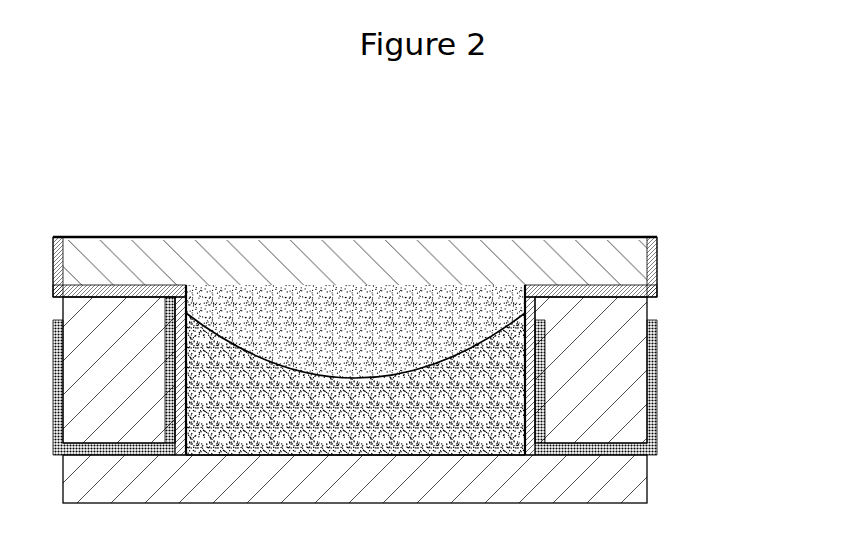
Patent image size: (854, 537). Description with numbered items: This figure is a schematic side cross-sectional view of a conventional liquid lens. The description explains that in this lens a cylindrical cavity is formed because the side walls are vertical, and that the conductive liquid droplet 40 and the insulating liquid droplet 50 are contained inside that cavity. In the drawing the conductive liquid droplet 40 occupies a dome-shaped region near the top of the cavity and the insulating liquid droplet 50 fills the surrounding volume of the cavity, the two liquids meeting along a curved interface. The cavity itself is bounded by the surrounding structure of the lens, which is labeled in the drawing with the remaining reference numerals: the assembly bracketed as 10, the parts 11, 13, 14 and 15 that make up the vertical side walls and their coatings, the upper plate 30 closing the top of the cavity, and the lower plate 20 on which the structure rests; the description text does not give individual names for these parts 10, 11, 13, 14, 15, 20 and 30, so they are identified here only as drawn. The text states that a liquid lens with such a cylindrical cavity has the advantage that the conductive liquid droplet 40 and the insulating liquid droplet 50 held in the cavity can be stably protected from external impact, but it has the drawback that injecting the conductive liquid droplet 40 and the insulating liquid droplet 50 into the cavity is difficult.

The mold assembly 10 is at (427, 346).
The mold body 11 is at (617, 400).
The coating layer 13 is at (652, 365).
The inner wall 14 is at (530, 308).
The upper plate border 15 is at (397, 267).
The base plate 20 is at (630, 482).
The upper plate 30 is at (547, 260).
The conductive liquid droplet 40 is at (378, 320).
The insulating liquid droplet 50 is at (243, 385).